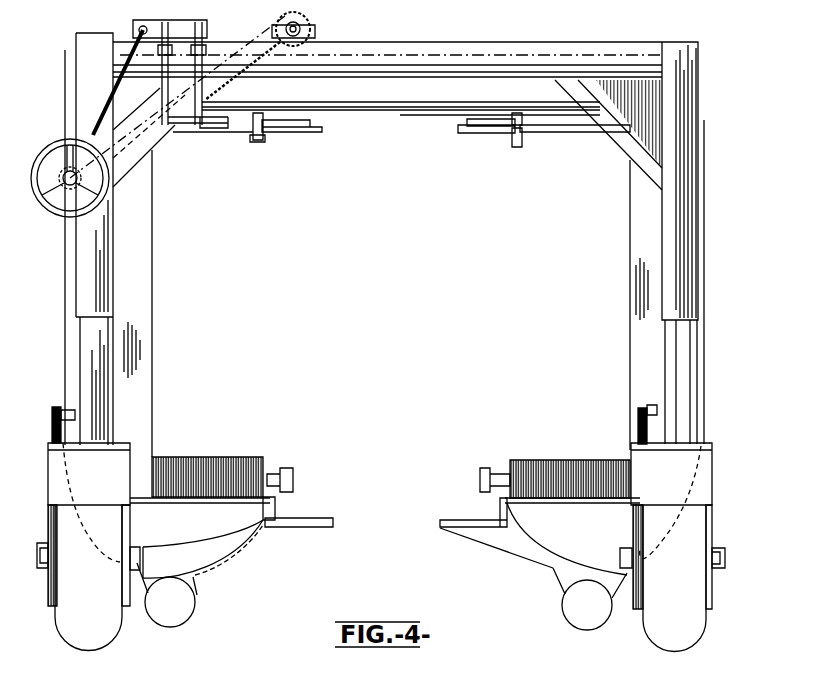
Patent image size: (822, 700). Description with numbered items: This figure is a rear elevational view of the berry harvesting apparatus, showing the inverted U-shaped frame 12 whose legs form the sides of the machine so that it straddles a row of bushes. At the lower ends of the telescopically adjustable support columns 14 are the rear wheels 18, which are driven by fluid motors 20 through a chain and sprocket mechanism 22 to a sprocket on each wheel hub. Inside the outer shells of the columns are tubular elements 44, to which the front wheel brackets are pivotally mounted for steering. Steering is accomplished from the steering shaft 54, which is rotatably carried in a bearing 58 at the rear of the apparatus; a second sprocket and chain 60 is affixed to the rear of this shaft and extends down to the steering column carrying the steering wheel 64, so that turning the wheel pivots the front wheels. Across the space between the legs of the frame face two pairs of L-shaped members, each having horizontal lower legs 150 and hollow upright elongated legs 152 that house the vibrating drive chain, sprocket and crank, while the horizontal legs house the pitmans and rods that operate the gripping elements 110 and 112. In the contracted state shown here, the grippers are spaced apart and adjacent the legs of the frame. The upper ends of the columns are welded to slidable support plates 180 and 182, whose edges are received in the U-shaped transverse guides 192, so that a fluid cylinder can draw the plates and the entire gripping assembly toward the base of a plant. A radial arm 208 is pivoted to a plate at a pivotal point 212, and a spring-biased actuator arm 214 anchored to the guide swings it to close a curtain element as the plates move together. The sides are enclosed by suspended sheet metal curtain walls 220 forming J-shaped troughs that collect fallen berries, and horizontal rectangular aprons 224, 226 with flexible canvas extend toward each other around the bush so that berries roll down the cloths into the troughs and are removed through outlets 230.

The frame 12 is at (547, 42).
The telescopically adjustable support columns 14 is at (702, 242).
The rear wheels 18 is at (100, 635).
The fluid motors 20 is at (63, 408).
The chain and sprocket mechanism 22 is at (48, 577).
The tubular elements 44 is at (683, 385).
The steering shaft 54 is at (313, 23).
The bearing 58 is at (312, 40).
The second sprocket and chain 60 is at (253, 32).
The steering wheel 64 is at (55, 147).
The gripping element 110 is at (277, 467).
The gripping element 112 is at (483, 468).
The horizontal lower legs 150 is at (212, 462).
The upright elongated legs 152 is at (140, 277).
The slidable support plate 180 is at (452, 112).
The slidable support plate 182 is at (357, 108).
The transverse guides 192 is at (413, 108).
The radial arm 208 is at (588, 135).
The pivotal point 212 is at (525, 145).
The biasing actuator arm 214 is at (280, 134).
The curtain walls 220 is at (143, 548).
The aprons 224 is at (310, 520).
The aprons 226 is at (282, 537).
The outlets 230 is at (172, 625).